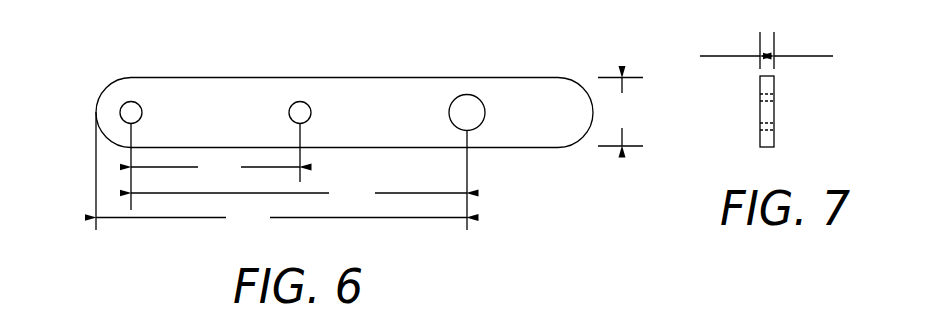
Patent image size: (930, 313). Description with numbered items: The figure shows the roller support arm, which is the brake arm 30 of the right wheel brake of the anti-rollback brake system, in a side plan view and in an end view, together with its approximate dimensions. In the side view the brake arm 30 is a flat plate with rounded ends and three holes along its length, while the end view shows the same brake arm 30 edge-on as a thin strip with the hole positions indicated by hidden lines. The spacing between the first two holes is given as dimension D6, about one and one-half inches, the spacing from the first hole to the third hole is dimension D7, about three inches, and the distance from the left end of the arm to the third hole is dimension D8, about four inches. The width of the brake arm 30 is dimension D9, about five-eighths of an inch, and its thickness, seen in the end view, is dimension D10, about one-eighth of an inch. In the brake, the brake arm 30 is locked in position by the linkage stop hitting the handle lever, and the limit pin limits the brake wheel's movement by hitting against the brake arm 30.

In FIG. 6, the brake arm 30 is at (368, 98).
In FIG. 7, the brake arm 30 is at (774, 137).
In FIG. 6, the dimension D6 is at (215, 168).
In FIG. 6, the dimension D7 is at (299, 194).
In FIG. 6, the dimension D8 is at (281, 218).
In FIG. 6, the dimension D9 is at (620, 112).
In FIG. 7, the dimension D10 is at (792, 52).